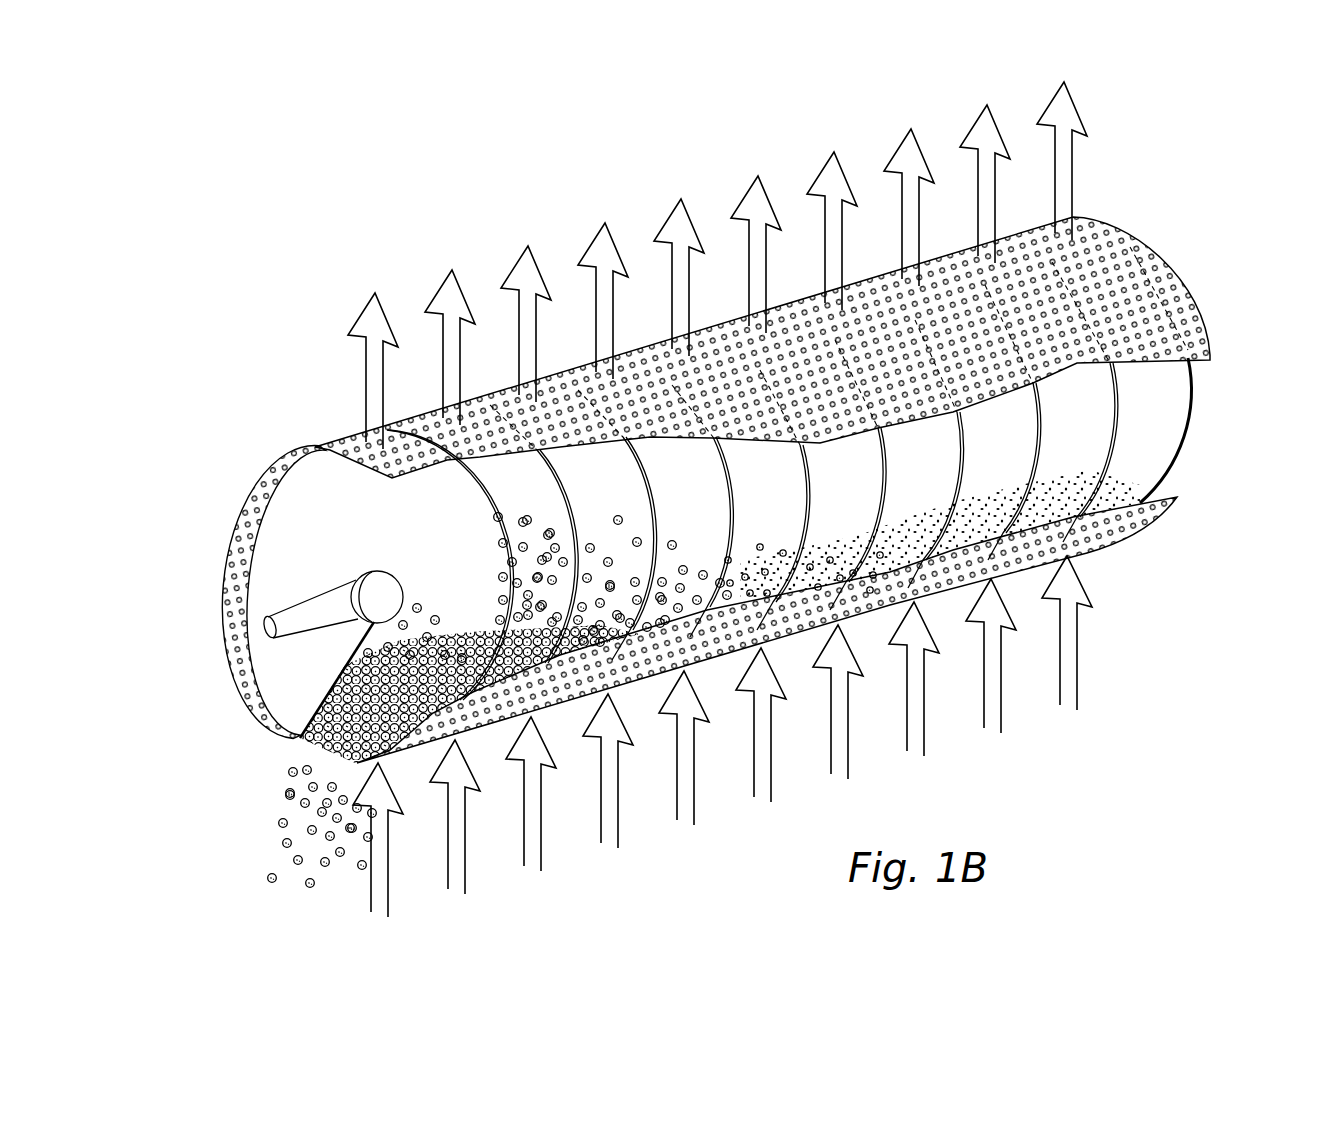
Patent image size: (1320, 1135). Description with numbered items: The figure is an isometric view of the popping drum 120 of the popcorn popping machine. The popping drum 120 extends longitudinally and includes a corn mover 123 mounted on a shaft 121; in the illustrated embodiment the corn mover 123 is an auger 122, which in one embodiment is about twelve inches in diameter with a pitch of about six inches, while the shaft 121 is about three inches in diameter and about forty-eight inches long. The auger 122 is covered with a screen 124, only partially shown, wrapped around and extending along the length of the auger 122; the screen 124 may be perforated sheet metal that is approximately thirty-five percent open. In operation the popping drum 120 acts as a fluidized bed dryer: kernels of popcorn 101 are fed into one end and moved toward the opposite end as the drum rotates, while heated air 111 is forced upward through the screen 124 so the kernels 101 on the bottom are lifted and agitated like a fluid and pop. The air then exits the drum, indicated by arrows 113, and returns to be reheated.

The popcorn 101 is at (295, 877).
The heated air 111 is at (615, 810).
The air passing through the popping drum 113 is at (612, 238).
The popping drum 120 is at (267, 353).
The shaft 121 is at (257, 627).
The auger 122 is at (1160, 410).
The corn mover 123 is at (1143, 462).
The screen 124 is at (1102, 278).